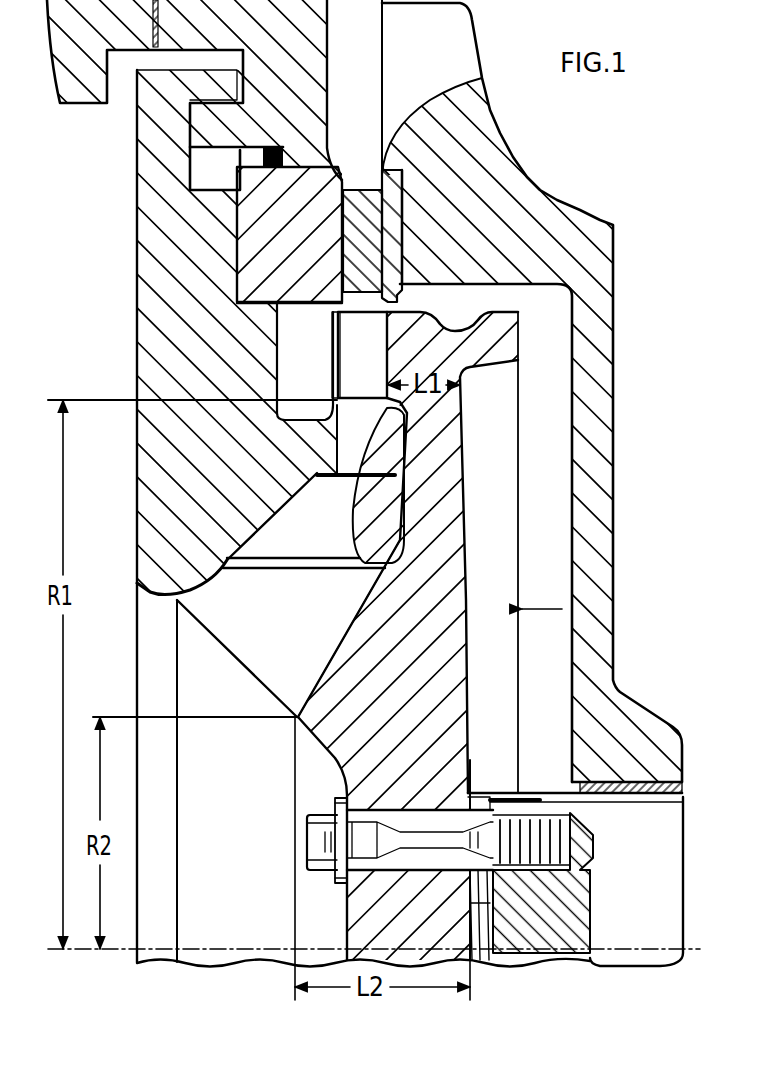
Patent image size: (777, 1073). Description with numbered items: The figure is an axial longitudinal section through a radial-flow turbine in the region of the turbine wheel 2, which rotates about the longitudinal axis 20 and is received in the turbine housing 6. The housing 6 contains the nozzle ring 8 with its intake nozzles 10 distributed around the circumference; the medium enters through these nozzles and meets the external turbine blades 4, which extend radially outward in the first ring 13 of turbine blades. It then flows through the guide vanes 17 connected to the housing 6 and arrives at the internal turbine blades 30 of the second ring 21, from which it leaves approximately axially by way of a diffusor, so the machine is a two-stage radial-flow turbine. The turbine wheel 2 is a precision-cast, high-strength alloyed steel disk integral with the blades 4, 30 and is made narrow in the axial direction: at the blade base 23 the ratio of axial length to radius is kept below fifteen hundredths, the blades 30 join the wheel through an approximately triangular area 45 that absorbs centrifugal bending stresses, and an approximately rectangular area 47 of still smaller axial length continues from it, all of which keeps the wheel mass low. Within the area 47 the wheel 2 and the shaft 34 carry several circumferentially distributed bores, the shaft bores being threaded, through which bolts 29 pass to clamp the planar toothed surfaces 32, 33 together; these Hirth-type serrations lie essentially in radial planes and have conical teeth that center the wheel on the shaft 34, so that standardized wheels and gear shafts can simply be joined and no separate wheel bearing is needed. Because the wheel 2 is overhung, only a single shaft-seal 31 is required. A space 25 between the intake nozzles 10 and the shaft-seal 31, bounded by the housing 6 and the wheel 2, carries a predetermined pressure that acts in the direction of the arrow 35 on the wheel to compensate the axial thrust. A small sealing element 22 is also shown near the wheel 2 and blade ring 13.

The turbine wheel 2 is at (445, 517).
The external turbine blades 4 is at (369, 379).
The turbine housing 6 is at (600, 612).
The nozzle ring 8 is at (357, 196).
The intake nozzles 10 is at (366, 296).
The first ring of turbine blades 13 is at (332, 357).
The guide vanes 17 is at (325, 537).
The longitudinal axis 20 is at (212, 948).
The second ring of turbine blades 21 is at (241, 670).
The seal 22 is at (273, 157).
The blade base 23 is at (374, 406).
The space 25 is at (557, 423).
The bolts 29 is at (502, 793).
The internal turbine blades 30 is at (297, 632).
The shaft-seal 31 is at (584, 790).
The planar toothed surface 32 is at (484, 955).
The planar toothed surface 33 is at (503, 960).
The shaft 34 is at (640, 872).
The arrow 35 is at (550, 609).
The triangular area 45 is at (330, 676).
The rectangular area 47 is at (370, 914).